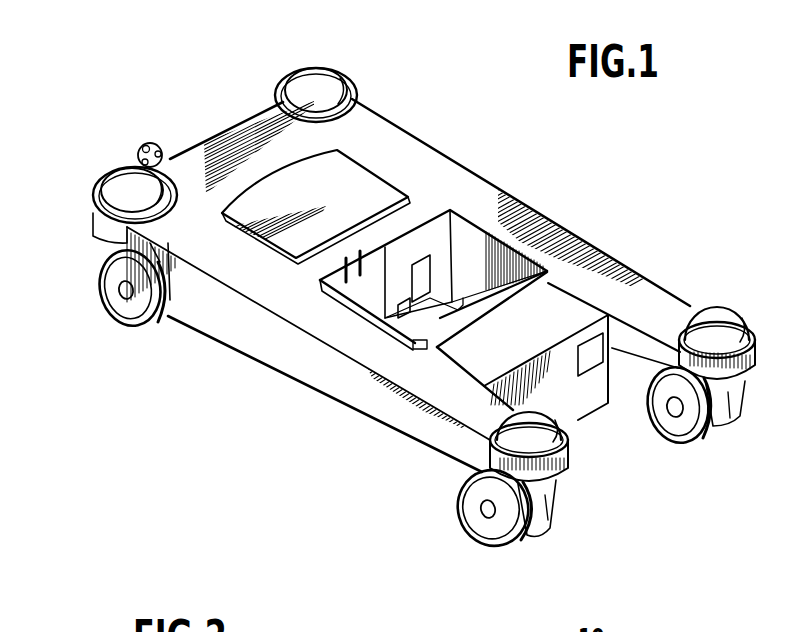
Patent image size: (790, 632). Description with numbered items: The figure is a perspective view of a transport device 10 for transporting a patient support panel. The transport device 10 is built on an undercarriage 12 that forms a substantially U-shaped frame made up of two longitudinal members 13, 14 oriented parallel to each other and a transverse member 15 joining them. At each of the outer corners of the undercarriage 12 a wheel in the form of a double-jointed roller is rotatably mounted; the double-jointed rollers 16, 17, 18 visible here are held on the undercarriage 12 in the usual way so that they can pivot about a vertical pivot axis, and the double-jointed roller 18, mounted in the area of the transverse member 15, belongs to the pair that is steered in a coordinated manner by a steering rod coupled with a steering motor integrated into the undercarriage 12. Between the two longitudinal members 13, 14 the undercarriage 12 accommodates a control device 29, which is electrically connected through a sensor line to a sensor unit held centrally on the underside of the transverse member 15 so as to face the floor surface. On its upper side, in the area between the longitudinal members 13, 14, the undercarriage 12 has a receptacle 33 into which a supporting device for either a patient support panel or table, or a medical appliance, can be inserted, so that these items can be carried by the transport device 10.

The transport device 10 is at (422, 122).
The undercarriage 12 is at (615, 257).
The longitudinal member 13 is at (318, 343).
The longitudinal member 14 is at (555, 221).
The transverse member 15 is at (208, 140).
The double-jointed roller 16 is at (490, 545).
The double-jointed roller 17 is at (690, 440).
The double-jointed roller 18 is at (135, 327).
The control device 29 is at (562, 382).
The receptacle 33 is at (468, 248).